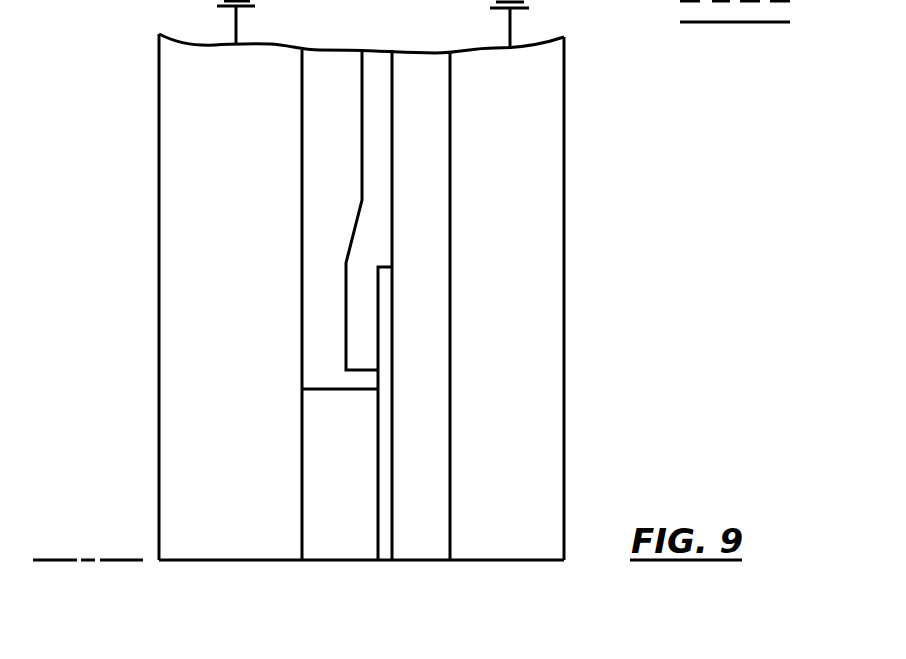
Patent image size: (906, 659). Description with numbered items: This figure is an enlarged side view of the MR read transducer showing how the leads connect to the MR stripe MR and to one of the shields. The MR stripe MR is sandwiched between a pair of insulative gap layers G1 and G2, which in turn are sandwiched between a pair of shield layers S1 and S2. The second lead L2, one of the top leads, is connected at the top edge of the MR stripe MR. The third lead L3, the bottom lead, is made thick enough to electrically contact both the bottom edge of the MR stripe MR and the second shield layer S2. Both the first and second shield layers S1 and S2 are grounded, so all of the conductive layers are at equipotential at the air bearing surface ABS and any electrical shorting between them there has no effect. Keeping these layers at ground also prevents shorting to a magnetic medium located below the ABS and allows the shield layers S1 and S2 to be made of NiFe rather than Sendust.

The second shield layer S2 is at (203, 297).
The second insulative gap layer G2 is at (325, 305).
The second lead L2 is at (369, 305).
The MR stripe MR is at (385, 358).
The first insulative gap layer G1 is at (429, 306).
The first shield layer S1 is at (529, 298).
The third lead L3 is at (340, 435).
The air bearing surface ABS is at (94, 566).